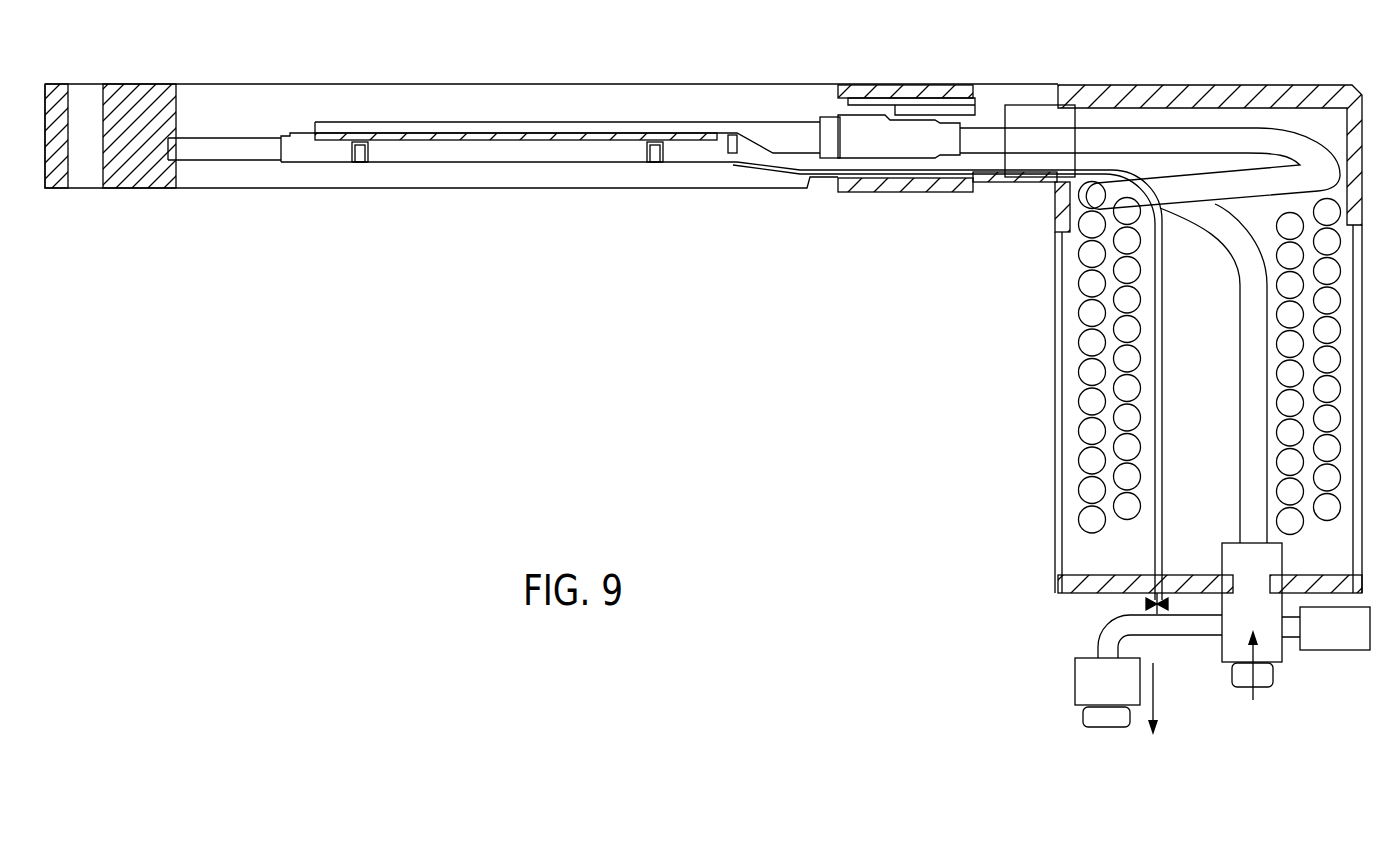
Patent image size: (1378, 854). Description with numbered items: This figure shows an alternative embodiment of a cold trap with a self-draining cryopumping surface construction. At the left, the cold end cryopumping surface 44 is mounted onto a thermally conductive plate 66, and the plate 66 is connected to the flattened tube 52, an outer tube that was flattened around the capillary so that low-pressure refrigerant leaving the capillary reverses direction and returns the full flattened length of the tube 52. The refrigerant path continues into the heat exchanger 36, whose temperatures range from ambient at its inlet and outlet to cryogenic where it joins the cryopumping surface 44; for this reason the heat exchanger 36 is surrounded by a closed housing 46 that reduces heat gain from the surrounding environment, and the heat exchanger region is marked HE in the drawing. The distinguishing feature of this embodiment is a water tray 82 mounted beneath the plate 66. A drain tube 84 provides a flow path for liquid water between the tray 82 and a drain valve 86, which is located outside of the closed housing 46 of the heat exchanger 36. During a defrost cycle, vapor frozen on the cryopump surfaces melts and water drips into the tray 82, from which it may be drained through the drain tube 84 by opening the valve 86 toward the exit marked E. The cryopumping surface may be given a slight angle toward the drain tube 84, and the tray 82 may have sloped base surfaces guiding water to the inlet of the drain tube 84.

The cryopumping surface 44 is at (574, 116).
The flattened tube 52 is at (688, 128).
The thermally conductive plate 66 is at (553, 142).
The water tray 82 is at (612, 165).
The drain tube 84 is at (812, 172).
The heat exchanger HE is at (961, 186).
The housing 46 is at (1024, 324).
The heat exchanger 36 is at (1066, 242).
The drain valve 86 is at (1162, 610).
The exit port E is at (1116, 667).